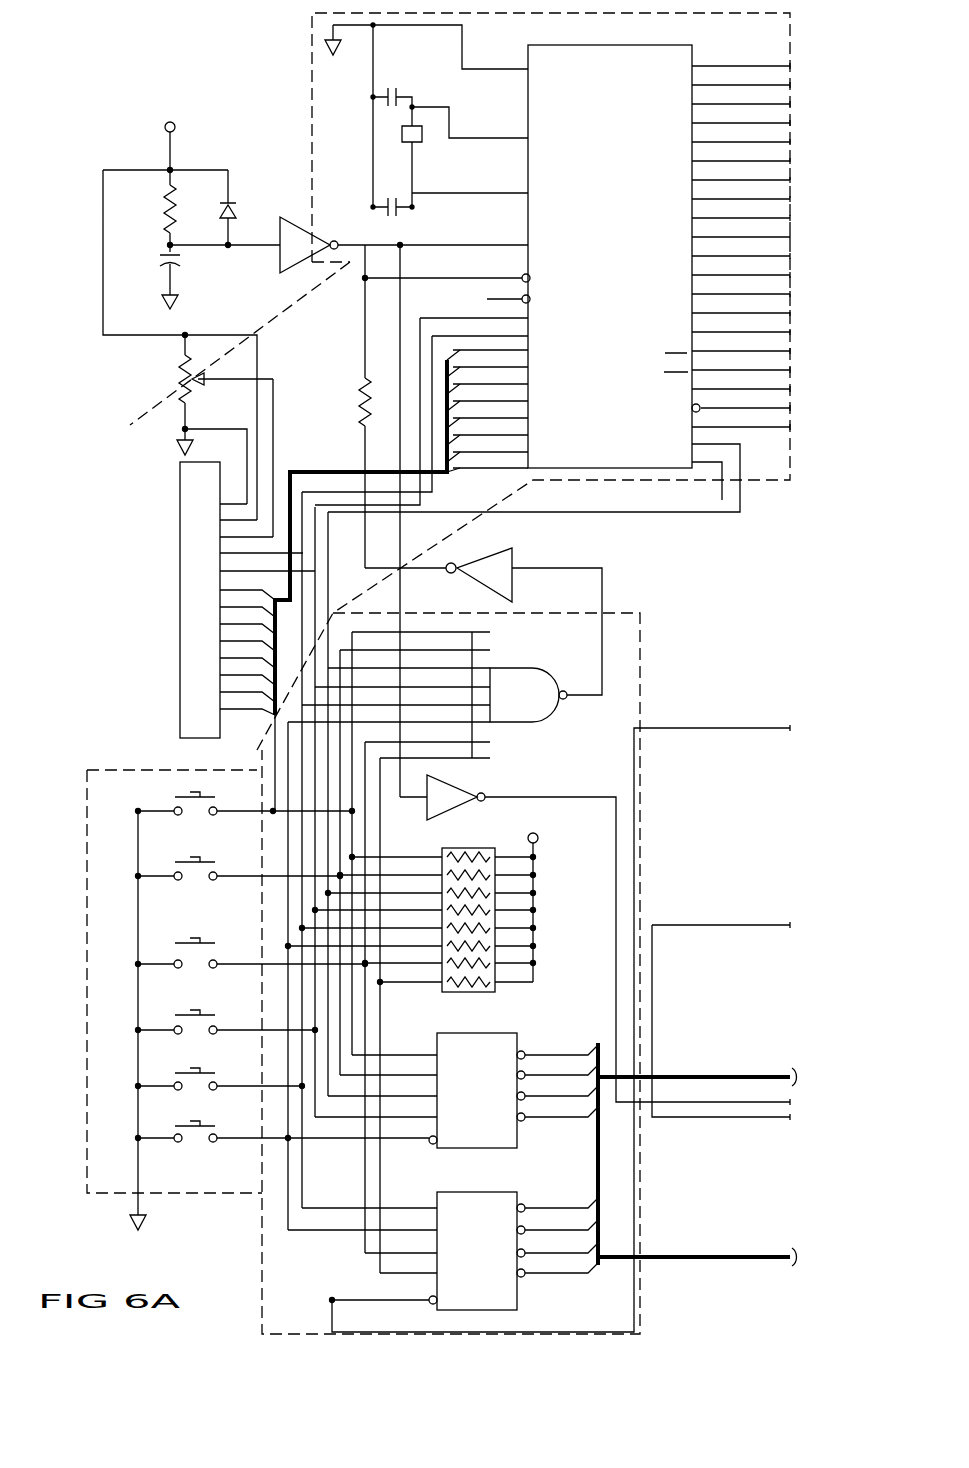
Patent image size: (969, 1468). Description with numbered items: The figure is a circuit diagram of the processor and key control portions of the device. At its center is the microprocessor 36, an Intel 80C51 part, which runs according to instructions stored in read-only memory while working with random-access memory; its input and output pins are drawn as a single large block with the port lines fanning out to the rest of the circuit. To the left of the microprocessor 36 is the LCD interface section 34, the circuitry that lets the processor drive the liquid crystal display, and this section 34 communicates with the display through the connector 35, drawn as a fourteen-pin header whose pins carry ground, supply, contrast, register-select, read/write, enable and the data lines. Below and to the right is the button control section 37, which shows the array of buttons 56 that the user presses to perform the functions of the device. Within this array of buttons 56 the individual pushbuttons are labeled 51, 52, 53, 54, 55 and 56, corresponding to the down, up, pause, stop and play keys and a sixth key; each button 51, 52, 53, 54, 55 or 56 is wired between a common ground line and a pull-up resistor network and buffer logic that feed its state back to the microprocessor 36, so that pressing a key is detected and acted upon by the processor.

The LCD interface section 34 is at (95, 421).
The connector 35 is at (187, 713).
The microprocessor 36 is at (608, 46).
The button control section 37 is at (603, 742).
The down key 51 is at (245, 804).
The up key 52 is at (239, 869).
The pause key 53 is at (251, 954).
The stop key 54 is at (226, 1021).
The play key 55 is at (220, 1078).
The array of buttons 56 is at (119, 823).